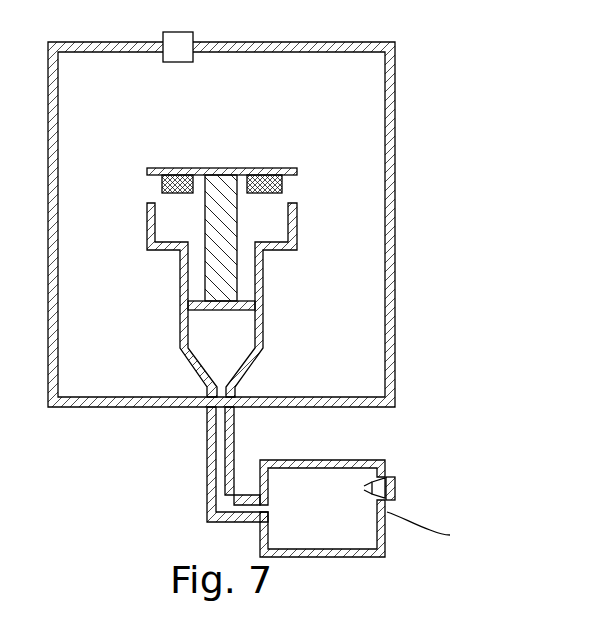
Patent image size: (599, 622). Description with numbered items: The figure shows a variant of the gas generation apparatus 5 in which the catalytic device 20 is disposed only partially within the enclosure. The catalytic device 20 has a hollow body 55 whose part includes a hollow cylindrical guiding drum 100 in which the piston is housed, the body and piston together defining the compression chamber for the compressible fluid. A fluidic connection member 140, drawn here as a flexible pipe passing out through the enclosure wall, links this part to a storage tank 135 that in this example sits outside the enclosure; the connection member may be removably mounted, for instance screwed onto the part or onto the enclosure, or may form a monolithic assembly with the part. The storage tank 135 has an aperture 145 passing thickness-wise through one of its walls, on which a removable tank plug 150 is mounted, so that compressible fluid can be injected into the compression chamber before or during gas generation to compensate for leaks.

The gas generation apparatus 5 is at (410, 182).
The catalytic device 20 is at (263, 320).
The hollow body 55 is at (180, 267).
The hollow cylindrical guiding drum 100 is at (180, 315).
The fluidic connection member 140 is at (237, 448).
The storage tank 135 is at (360, 460).
The removable tank plug 150 is at (395, 483).
The aperture 145 is at (439, 530).